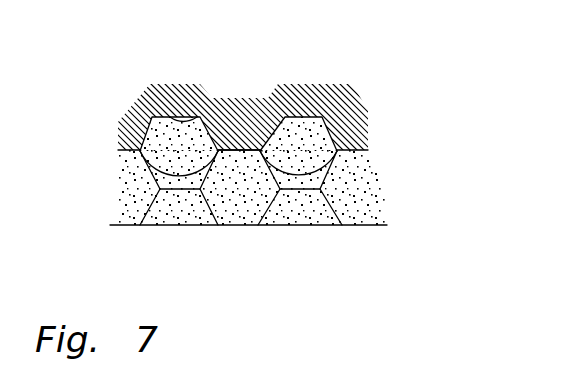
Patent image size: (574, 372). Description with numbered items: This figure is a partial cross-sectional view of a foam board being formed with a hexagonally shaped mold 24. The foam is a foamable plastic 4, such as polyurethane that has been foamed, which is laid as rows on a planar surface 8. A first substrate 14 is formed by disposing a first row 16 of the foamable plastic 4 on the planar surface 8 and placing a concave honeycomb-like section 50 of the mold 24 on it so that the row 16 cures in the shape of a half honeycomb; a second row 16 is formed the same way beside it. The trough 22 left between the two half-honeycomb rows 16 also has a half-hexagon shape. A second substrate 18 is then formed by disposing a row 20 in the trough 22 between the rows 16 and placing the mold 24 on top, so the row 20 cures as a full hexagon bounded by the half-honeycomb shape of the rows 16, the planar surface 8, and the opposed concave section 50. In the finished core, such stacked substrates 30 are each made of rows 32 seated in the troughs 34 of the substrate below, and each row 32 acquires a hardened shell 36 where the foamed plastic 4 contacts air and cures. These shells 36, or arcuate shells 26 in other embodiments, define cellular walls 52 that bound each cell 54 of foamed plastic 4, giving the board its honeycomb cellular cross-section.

The foamed plastic 4 is at (340, 123).
The planar surface 8 is at (383, 225).
The first substrate 14 is at (317, 200).
The row 16 is at (333, 225).
The second substrate 18 is at (360, 208).
The row 20 is at (245, 150).
The trough 22 is at (248, 228).
The mold 24 is at (318, 112).
The shell 26 is at (148, 204).
The substrate 30 is at (360, 225).
The row 32 is at (221, 226).
The trough 34 is at (257, 227).
The hardened shell 36 is at (314, 198).
The concave honeycomb-like section 50 is at (158, 92).
The cellular wall 52 is at (232, 150).
The cell 54 is at (217, 150).